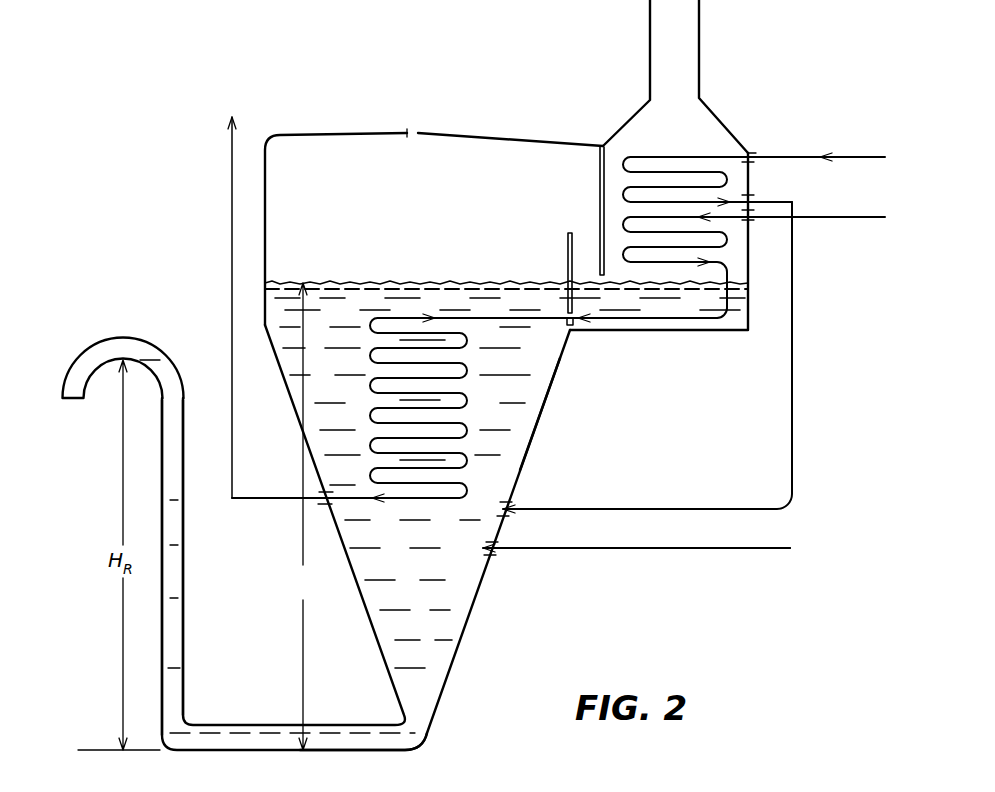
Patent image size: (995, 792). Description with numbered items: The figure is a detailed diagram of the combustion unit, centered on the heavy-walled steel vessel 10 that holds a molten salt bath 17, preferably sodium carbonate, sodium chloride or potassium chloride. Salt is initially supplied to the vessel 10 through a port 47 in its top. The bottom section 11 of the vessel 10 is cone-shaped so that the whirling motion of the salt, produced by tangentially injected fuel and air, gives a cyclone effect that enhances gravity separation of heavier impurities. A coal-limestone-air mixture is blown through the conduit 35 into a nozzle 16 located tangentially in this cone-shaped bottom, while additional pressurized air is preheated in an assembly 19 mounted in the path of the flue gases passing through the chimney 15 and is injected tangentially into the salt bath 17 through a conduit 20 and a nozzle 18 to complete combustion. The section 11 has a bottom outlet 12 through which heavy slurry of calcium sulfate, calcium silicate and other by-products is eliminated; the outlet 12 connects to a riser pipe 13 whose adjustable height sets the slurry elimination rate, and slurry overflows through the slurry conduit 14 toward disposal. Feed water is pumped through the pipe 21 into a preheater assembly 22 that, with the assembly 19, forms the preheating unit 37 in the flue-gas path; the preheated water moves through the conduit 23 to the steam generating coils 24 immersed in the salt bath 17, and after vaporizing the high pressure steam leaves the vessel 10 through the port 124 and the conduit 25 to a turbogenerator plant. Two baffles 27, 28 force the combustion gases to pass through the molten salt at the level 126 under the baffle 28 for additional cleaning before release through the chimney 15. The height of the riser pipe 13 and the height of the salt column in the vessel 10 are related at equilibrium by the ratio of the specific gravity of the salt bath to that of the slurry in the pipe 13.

The vessel 10 is at (322, 133).
The bottom section 11 is at (522, 462).
The bottom outlet 12 is at (435, 728).
The riser pipe 13 is at (175, 658).
The slurry conduit 14 is at (103, 353).
The chimney 15 is at (700, 62).
The nozzle 16 is at (488, 552).
The molten salt bath 17 is at (512, 402).
The nozzle 18 is at (508, 500).
The air preheating assembly 19 is at (750, 178).
The conduit 20 is at (795, 355).
The feed-water pipe 21 is at (858, 216).
The preheater assembly 22 is at (750, 247).
The conduit 23 is at (650, 330).
The steam generating coils 24 is at (462, 433).
The conduit 25 is at (230, 212).
The baffle 27 is at (566, 250).
The baffle 28 is at (598, 187).
The conduit 35 is at (790, 550).
The preheating unit 37 is at (697, 140).
The port 47 is at (422, 135).
The port 124 is at (327, 500).
The level 126 is at (302, 278).